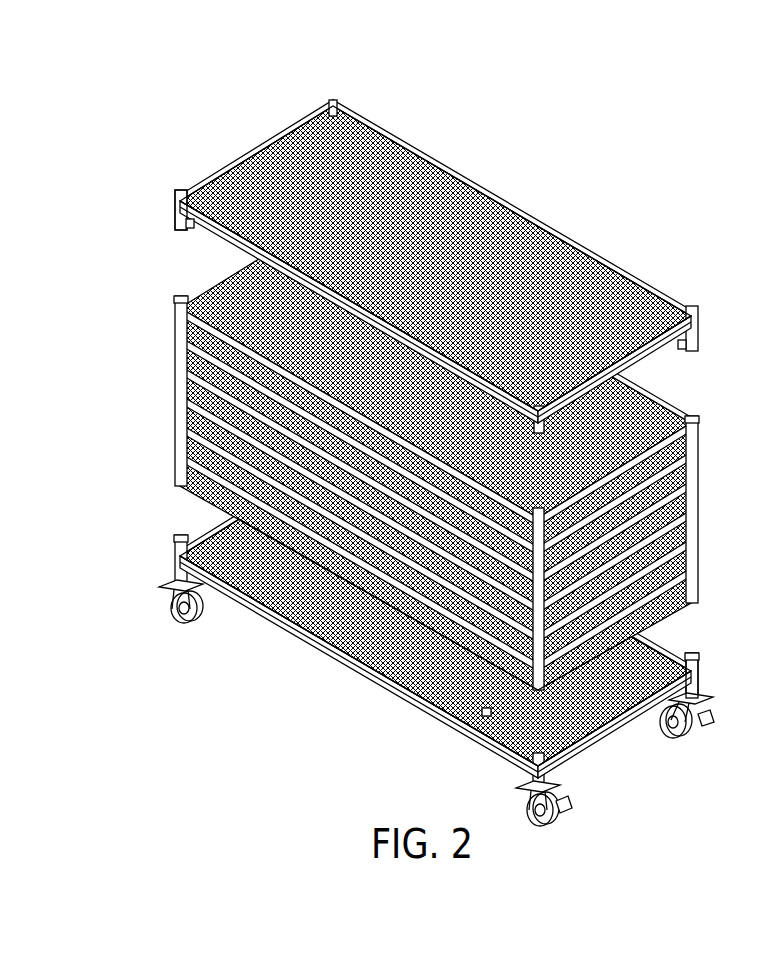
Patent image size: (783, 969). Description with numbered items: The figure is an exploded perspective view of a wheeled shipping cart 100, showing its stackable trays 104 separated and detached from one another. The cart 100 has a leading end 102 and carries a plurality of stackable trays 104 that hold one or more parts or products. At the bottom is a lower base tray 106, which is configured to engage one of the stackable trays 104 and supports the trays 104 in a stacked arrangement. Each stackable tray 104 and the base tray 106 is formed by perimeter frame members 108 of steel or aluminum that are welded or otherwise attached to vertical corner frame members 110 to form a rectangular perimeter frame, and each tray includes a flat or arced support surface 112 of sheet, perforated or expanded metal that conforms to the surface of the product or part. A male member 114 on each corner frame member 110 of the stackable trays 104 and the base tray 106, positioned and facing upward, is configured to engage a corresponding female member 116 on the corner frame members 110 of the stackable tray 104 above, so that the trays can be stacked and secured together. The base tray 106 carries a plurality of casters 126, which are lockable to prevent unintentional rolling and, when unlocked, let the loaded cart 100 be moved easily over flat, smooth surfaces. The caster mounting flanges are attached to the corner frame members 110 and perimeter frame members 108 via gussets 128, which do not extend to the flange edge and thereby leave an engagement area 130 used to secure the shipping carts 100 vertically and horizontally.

The wheeled shipping cart 100 is at (465, 456).
The leading end 102 is at (237, 118).
The stackable tray 104 is at (648, 262).
The lower base tray 106 is at (333, 653).
The perimeter frame member 108 is at (402, 148).
The vertical corner frame member 110 is at (162, 212).
The support surface 112 is at (455, 195).
The male member 114 is at (168, 294).
The female member 116 is at (170, 218).
The caster 126 is at (560, 798).
The gusset 128 is at (690, 684).
The engagement area 130 is at (548, 763).